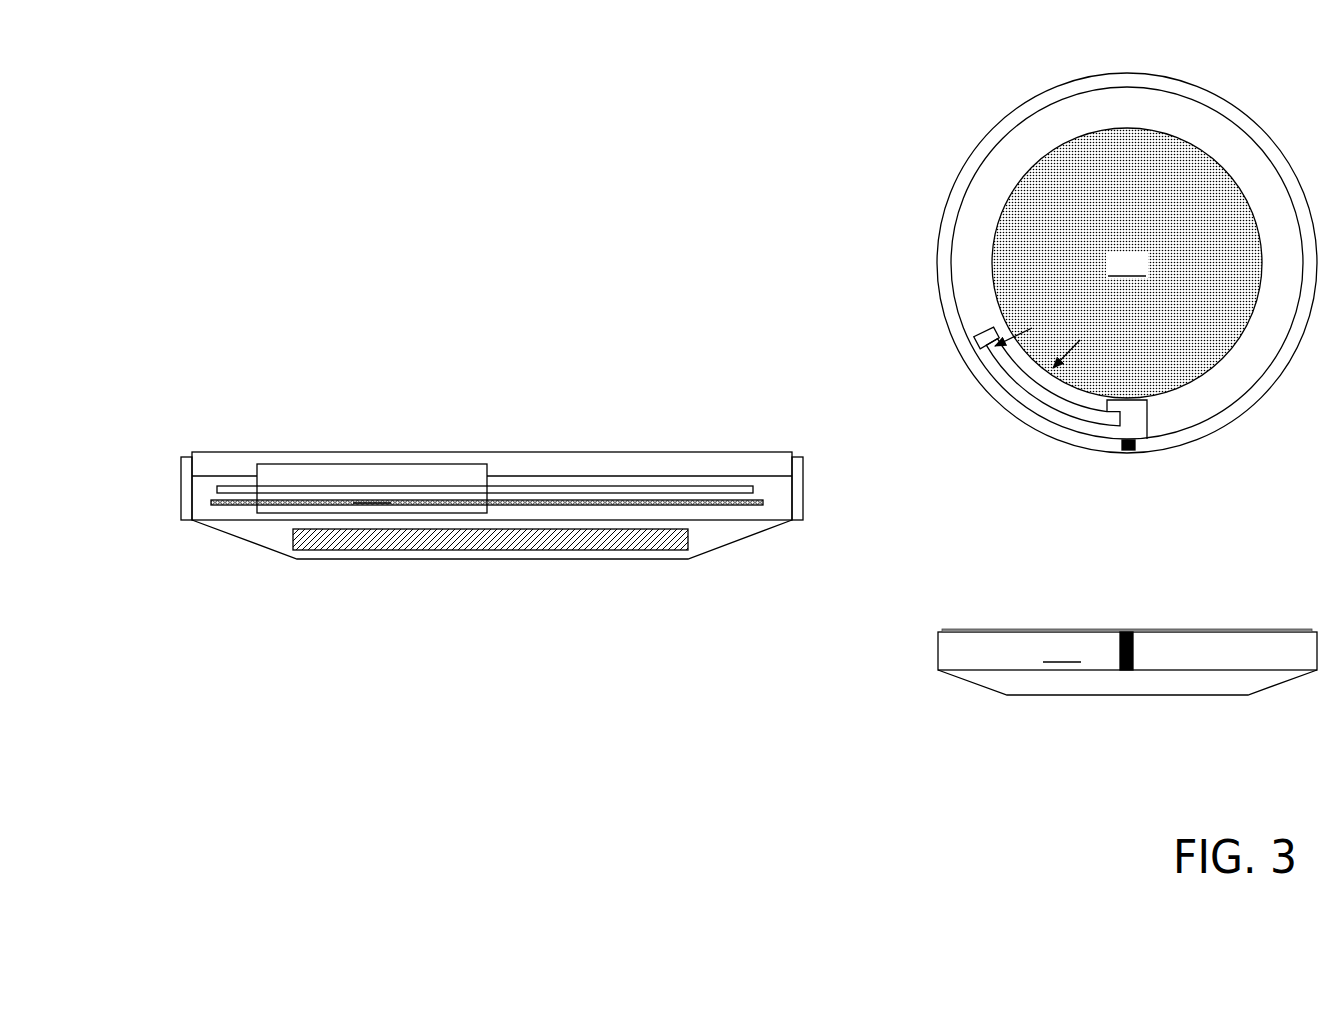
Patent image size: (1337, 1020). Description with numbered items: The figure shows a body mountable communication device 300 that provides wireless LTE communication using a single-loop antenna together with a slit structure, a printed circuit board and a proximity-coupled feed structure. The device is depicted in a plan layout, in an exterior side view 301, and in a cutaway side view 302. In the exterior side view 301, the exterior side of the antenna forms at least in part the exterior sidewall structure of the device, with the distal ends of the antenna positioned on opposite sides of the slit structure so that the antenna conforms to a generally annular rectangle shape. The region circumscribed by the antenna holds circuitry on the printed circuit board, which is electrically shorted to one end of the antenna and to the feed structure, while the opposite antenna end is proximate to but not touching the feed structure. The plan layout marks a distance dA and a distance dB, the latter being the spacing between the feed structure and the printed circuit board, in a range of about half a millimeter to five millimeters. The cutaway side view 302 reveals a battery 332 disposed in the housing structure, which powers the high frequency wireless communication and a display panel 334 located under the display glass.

The body mountable communication device 300 is at (905, 117).
The exterior side view 301 is at (905, 577).
The cutaway side view 302 is at (178, 334).
The battery 332 is at (538, 556).
The display panel 334 is at (581, 478).
The distance A dA is at (966, 362).
The distance between proximity-coupled feed structure and PCB dB is at (1032, 399).